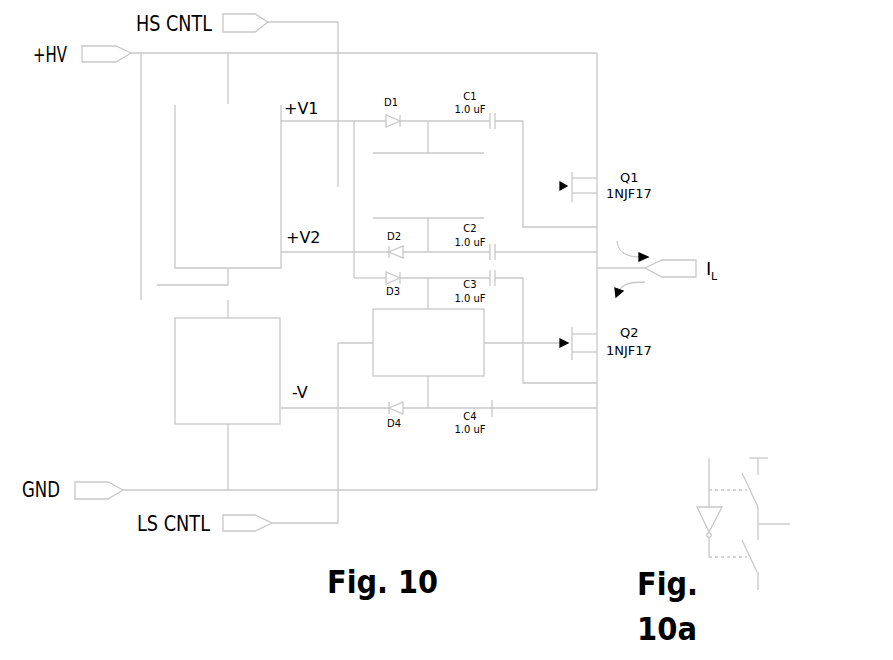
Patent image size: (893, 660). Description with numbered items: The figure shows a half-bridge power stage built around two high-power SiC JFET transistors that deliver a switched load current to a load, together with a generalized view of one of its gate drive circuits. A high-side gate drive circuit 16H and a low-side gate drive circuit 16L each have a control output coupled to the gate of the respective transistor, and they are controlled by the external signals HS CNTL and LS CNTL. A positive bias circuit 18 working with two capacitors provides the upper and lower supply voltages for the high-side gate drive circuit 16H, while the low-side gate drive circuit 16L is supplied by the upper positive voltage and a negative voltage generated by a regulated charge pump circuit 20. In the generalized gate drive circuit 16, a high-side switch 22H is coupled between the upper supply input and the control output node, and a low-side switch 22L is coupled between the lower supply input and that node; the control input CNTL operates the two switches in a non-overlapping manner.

In FIG. 10, the positive bias circuit 18 is at (217, 216).
In FIG. 10, the regulated charge pump circuit 20 is at (217, 403).
In FIG. 10, the high-side gate drive circuit 16H is at (475, 206).
In FIG. 10, the low-side gate drive circuit 16L is at (472, 361).
In FIG. 10A, the gate drive circuit 16 is at (766, 495).
In FIG. 10A, the high-side switch 22H is at (778, 485).
In FIG. 10A, the low-side switch 22L is at (778, 561).